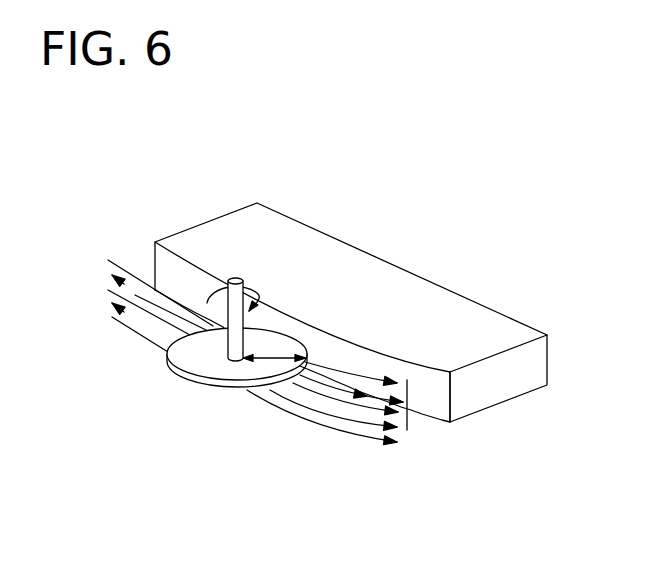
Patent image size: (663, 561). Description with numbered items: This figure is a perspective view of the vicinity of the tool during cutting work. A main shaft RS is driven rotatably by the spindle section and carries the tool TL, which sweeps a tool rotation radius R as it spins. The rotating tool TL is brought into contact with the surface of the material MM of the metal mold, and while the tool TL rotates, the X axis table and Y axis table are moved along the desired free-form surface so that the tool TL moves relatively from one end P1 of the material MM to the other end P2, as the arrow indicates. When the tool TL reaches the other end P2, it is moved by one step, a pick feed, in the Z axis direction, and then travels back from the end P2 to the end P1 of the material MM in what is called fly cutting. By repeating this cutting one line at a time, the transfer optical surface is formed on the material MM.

The end of the material P1 is at (158, 237).
The other end of the material P2 is at (455, 362).
The main shaft RS is at (240, 279).
The tool TL is at (305, 362).
The material of the metal mold MM is at (433, 300).
The tool rotation radius R is at (237, 358).